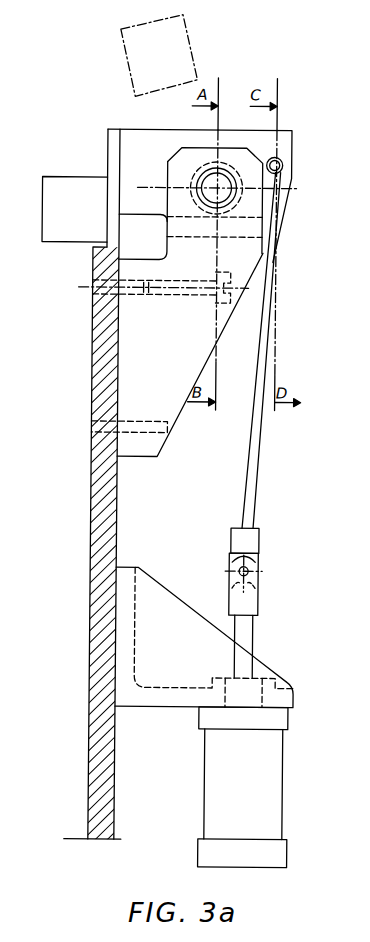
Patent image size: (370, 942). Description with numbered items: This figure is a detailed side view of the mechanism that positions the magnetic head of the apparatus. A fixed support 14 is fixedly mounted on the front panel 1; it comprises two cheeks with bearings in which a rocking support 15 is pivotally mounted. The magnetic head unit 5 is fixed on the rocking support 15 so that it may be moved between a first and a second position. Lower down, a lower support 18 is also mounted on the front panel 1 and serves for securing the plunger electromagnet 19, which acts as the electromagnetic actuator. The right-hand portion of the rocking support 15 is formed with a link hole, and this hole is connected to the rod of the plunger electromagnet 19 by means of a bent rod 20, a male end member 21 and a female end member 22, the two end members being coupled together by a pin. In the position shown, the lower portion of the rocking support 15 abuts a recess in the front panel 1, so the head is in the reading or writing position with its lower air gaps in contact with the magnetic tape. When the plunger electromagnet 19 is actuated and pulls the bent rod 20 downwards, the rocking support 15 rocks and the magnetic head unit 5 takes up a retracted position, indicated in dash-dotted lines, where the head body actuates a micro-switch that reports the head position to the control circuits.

The front panel 1 is at (112, 524).
The magnetic head unit 5 is at (60, 178).
The fixed support 14 is at (178, 413).
The rocking support 15 is at (150, 130).
The lower support 18 is at (166, 606).
The plunger electromagnet 19 is at (270, 793).
The bent rod 20 is at (260, 440).
The male end member 21 is at (254, 546).
The female end member 22 is at (256, 603).